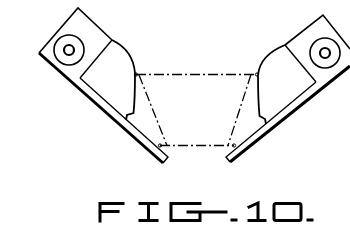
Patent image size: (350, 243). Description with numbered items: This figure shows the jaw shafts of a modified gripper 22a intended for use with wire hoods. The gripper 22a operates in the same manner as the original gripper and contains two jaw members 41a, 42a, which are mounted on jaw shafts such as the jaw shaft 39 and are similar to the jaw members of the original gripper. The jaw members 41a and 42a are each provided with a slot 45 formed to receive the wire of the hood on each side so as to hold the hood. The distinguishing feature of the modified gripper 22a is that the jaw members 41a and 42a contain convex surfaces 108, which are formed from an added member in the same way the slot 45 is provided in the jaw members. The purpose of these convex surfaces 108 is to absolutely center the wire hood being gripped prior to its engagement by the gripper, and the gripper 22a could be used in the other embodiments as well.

The jaw shaft 39 is at (349, 38).
The convex surface 108 is at (131, 61).
The jaw member 42a is at (97, 103).
The modified gripper 22a is at (108, 117).
The slot 45 is at (125, 121).
The jaw member 41a is at (286, 121).